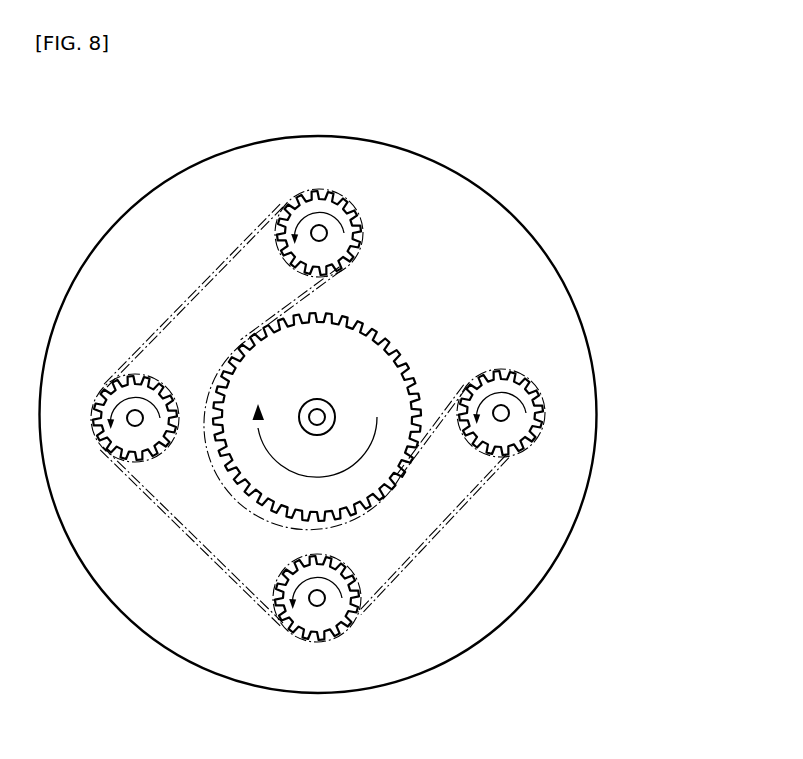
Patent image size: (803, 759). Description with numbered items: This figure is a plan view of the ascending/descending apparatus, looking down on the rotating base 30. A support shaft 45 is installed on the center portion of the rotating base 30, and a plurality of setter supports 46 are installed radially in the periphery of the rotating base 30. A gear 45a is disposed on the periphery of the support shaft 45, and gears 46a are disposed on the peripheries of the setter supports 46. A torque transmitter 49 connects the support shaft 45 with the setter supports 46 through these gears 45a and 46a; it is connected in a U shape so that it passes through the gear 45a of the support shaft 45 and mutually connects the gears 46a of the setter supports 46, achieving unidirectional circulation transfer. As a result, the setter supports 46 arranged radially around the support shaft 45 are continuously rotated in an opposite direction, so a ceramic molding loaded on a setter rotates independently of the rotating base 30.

The rotating base 30 is at (326, 157).
The support shaft 45 is at (410, 326).
The gear 45a is at (378, 358).
The setter supports 46 is at (559, 430).
The gear 46a is at (559, 451).
The torque transmitter 49 is at (463, 517).